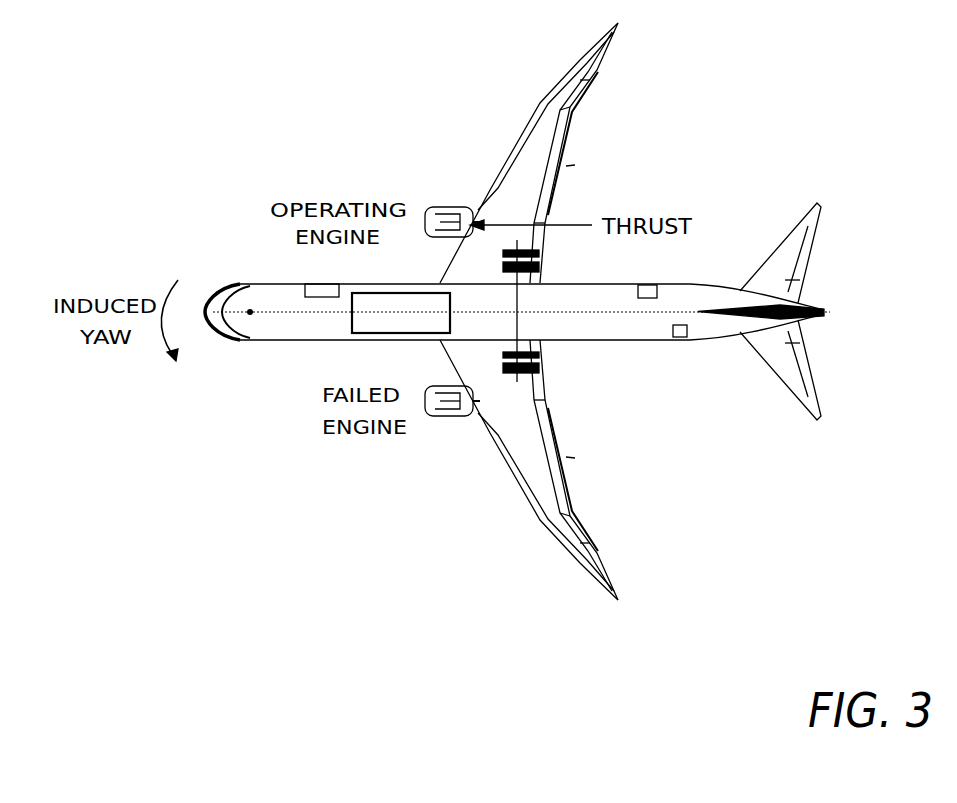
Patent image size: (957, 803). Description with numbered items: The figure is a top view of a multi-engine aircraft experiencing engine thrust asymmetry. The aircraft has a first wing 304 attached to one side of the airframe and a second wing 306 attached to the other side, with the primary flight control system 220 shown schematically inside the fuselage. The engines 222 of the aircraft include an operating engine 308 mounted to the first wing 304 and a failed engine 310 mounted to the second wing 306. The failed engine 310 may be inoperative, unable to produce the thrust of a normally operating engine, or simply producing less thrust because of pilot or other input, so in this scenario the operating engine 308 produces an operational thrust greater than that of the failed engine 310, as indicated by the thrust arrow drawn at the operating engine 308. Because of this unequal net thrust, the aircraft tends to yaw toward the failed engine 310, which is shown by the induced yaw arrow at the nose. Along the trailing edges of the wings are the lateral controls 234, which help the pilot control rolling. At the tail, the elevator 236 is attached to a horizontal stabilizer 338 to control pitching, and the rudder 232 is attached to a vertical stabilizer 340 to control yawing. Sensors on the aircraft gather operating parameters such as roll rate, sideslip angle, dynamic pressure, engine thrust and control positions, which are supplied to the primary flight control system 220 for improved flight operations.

The primary flight control system 220 is at (401, 313).
The engine 222 is at (427, 235).
The rudder 232 is at (815, 305).
The lateral controls 234 is at (542, 213).
The elevator 236 is at (807, 367).
The first wing 304 is at (528, 160).
The second wing 306 is at (523, 458).
The operating engine 308 is at (432, 208).
The failed engine 310 is at (428, 416).
The horizontal stabilizer 338 is at (787, 223).
The vertical stabilizer 340 is at (727, 318).